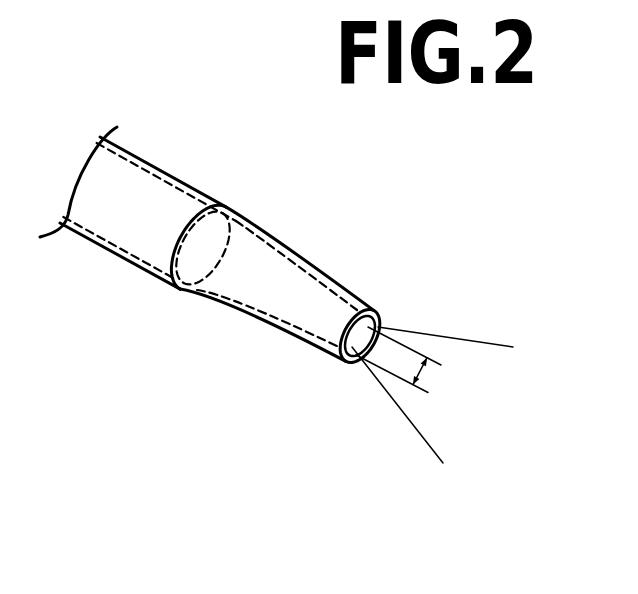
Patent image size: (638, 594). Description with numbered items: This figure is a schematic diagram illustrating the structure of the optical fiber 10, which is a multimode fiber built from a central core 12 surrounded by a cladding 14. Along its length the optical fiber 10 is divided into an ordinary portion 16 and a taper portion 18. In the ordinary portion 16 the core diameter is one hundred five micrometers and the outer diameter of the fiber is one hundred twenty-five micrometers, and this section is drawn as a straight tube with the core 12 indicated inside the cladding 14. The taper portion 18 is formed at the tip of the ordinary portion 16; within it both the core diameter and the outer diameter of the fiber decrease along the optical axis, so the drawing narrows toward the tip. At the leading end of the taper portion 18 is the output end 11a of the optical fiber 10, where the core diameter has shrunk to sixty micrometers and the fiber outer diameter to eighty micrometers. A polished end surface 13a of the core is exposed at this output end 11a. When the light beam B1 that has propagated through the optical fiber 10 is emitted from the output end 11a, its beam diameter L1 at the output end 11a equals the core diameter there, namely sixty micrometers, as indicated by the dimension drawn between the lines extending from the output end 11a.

The optical fiber 10 is at (138, 108).
The core 12 is at (187, 190).
The cladding 14 is at (165, 170).
The ordinary portion 16 is at (112, 257).
The taper portion 18 is at (240, 317).
The output end 11a is at (364, 308).
The polished end surface 13a is at (352, 356).
The light beam B1 is at (457, 337).
The beam diameter L1 is at (410, 365).